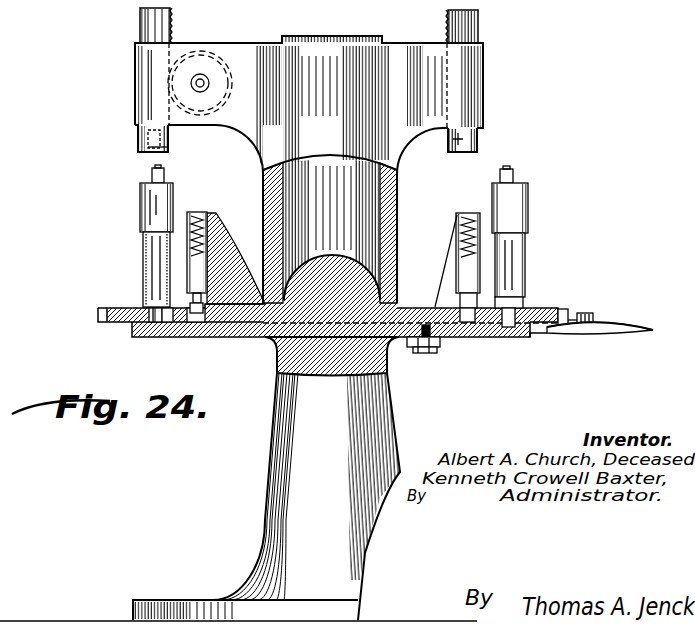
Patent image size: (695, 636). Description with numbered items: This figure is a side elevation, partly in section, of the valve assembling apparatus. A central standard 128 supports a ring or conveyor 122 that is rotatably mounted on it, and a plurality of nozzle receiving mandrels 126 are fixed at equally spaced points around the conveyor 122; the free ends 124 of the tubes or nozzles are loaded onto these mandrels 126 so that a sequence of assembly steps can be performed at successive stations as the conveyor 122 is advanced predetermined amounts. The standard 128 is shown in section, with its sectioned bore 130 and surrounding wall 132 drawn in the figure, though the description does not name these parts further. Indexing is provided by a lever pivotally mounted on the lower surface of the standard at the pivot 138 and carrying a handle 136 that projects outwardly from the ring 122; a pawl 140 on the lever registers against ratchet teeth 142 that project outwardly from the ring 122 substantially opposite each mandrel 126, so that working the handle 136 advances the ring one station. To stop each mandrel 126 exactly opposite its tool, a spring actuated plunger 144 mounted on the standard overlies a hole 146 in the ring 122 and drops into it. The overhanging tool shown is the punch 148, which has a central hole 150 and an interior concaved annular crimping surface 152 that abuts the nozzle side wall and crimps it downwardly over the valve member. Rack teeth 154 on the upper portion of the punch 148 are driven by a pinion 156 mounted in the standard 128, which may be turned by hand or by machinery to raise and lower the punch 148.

The conveyor 122 is at (547, 333).
The free ends 124 is at (140, 300).
The mandrel 126 is at (153, 252).
The central standard 128 is at (378, 439).
The bore 130 is at (365, 196).
The cylindrical wall 132 is at (390, 222).
The handle 136 is at (620, 329).
The pivot 138 is at (428, 354).
The pawl 140 is at (576, 316).
The ratchet teeth 142 is at (562, 311).
The spring actuated plunger 144 is at (460, 300).
The hole 146 is at (497, 336).
The punch 148 is at (140, 131).
The central hole 150 is at (150, 141).
The concaved annular crimping surface 152 is at (170, 144).
The rack teeth 154 is at (172, 29).
The pinion 156 is at (219, 54).